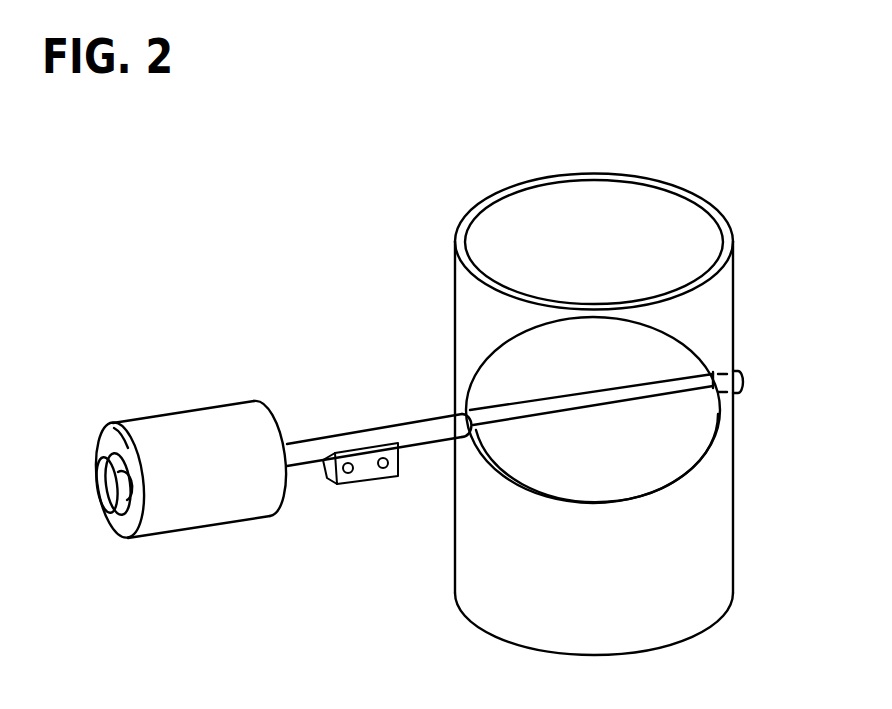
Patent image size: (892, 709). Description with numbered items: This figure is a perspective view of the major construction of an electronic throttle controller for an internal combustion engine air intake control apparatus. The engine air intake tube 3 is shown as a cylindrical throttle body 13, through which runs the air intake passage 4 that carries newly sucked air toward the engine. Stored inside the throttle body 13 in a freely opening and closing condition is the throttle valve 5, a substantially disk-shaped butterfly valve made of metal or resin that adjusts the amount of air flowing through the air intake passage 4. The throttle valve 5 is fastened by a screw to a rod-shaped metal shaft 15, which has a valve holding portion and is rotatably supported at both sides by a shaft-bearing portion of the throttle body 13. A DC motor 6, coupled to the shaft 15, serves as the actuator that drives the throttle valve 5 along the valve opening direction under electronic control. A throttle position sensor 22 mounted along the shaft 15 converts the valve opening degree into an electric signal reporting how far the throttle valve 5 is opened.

The engine air intake tube 3 is at (678, 178).
The air intake passage 4 is at (582, 190).
The throttle body 13 is at (735, 290).
The throttle valve 5 is at (693, 428).
The shaft 15 is at (420, 424).
The throttle position sensor 22 is at (369, 481).
The DC motor 6 is at (235, 516).